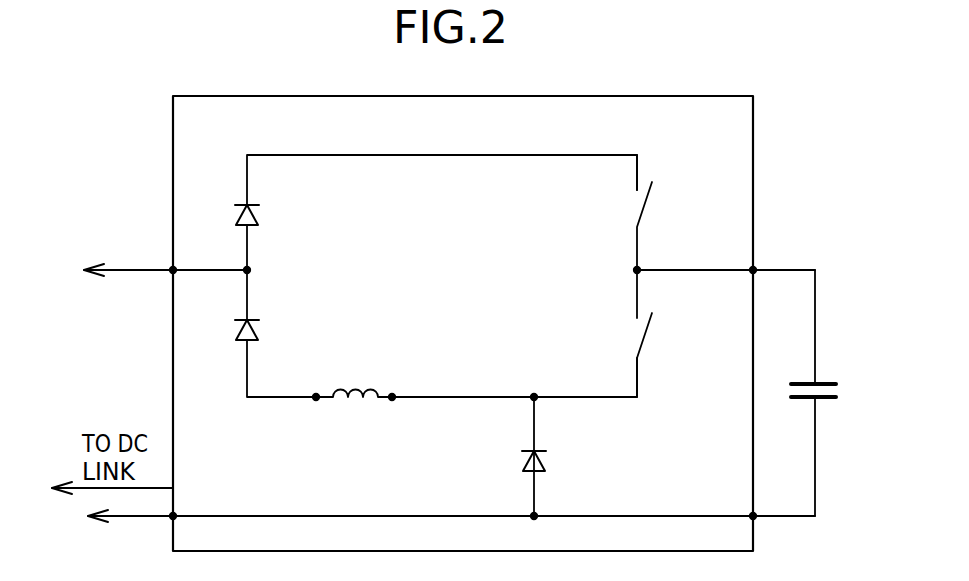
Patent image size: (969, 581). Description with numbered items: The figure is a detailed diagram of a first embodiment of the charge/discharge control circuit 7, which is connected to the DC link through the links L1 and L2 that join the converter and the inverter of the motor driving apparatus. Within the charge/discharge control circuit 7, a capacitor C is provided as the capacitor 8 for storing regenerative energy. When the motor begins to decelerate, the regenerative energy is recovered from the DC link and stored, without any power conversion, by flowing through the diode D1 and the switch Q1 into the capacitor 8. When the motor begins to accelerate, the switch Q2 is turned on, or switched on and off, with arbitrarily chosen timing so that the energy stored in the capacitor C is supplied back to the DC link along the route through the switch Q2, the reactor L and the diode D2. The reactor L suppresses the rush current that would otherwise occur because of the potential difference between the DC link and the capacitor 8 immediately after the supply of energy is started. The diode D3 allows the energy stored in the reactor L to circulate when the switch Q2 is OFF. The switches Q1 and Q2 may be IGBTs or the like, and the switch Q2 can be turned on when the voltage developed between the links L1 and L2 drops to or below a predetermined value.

The charge/discharge control circuit 7 is at (622, 96).
The capacitor 8 is at (806, 393).
The diode D1 is at (264, 217).
The diode D2 is at (264, 334).
The diode D3 is at (552, 455).
The switch Q1 is at (625, 212).
The switch Q2 is at (625, 333).
The reactor L is at (354, 378).
The capacitor C is at (852, 452).
The link L1 is at (151, 272).
The link L2 is at (433, 519).